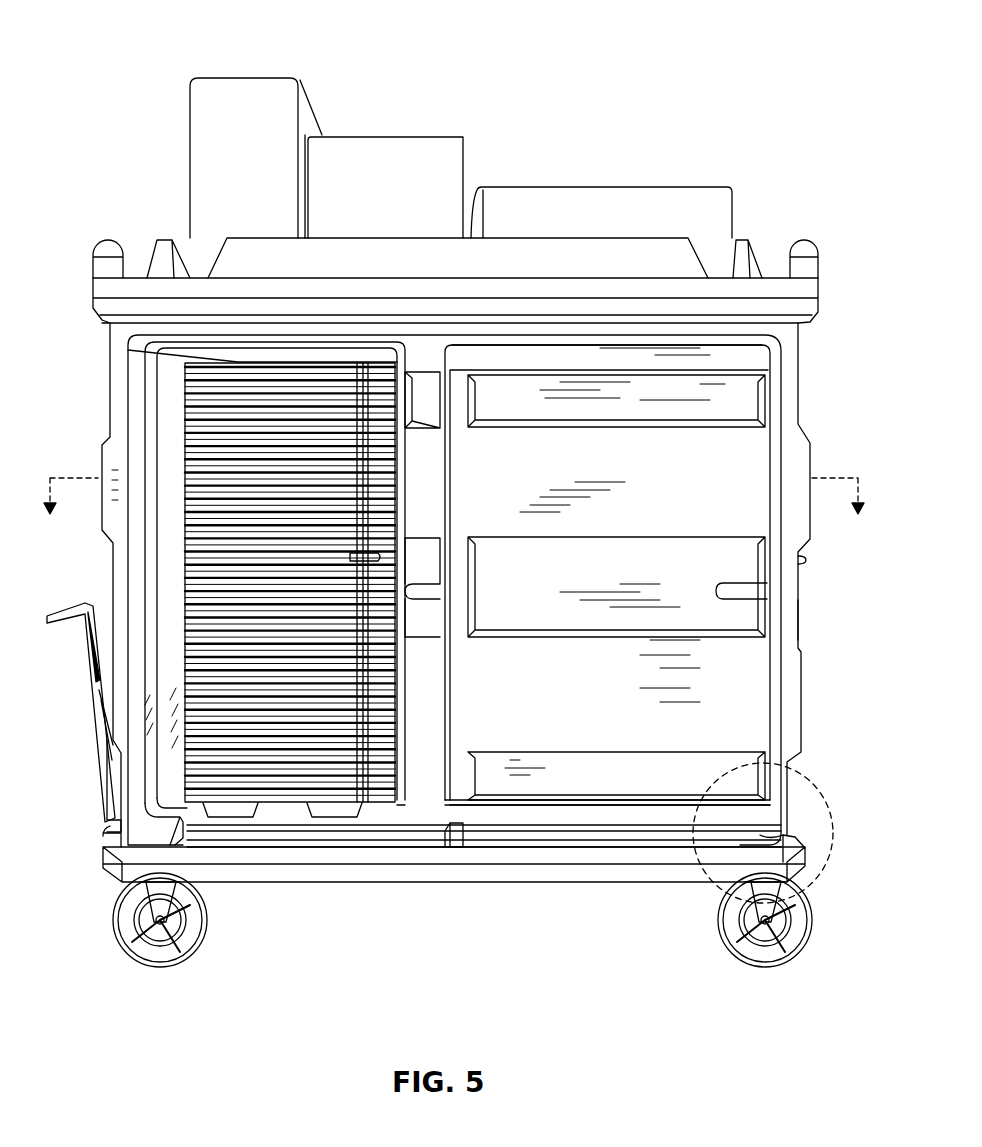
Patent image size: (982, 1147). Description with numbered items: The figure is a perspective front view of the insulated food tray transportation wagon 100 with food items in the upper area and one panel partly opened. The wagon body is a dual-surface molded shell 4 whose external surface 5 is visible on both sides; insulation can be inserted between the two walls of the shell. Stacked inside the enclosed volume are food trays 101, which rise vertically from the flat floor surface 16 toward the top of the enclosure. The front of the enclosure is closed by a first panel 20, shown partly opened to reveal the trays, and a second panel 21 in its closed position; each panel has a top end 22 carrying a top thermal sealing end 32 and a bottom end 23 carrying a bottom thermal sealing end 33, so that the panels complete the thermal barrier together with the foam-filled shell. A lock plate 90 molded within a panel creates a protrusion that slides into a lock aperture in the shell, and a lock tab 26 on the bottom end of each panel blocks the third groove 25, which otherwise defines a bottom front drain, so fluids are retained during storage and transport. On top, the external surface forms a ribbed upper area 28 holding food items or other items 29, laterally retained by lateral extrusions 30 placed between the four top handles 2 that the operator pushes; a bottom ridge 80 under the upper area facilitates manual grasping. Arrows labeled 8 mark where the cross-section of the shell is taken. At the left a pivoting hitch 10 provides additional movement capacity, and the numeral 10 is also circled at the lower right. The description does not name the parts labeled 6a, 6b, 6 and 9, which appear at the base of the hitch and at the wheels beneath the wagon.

The insulated food tray transportation wagon 100 is at (120, 52).
The food items or other items 29 is at (390, 136).
The upper area 28 is at (490, 174).
The lateral extrusions 30 is at (745, 240).
The top handles 2 is at (104, 242).
The bottom ridge 80 is at (100, 316).
The molded shell 4 is at (806, 452).
The external surface 5 is at (799, 598).
The section line 8 is at (454, 511).
The food trays 101 is at (190, 440).
The flat floor surface 16 is at (287, 818).
The lock plate 90 is at (368, 556).
The third groove 25 is at (180, 843).
The top end 22 is at (557, 336).
The top thermal sealing end 32 is at (650, 336).
The bottom end 23 is at (545, 830).
The bottom thermal sealing end 33 is at (650, 828).
The first panel 20 is at (420, 847).
The lock tab 26 is at (453, 833).
The second panel 21 is at (617, 820).
The pivoting hitch 10 is at (80, 653).
The handle bracket upper 6a is at (110, 808).
The handle bracket lower 6b is at (110, 834).
The caster bracket 6 is at (795, 837).
The caster wheel 9 is at (207, 932).